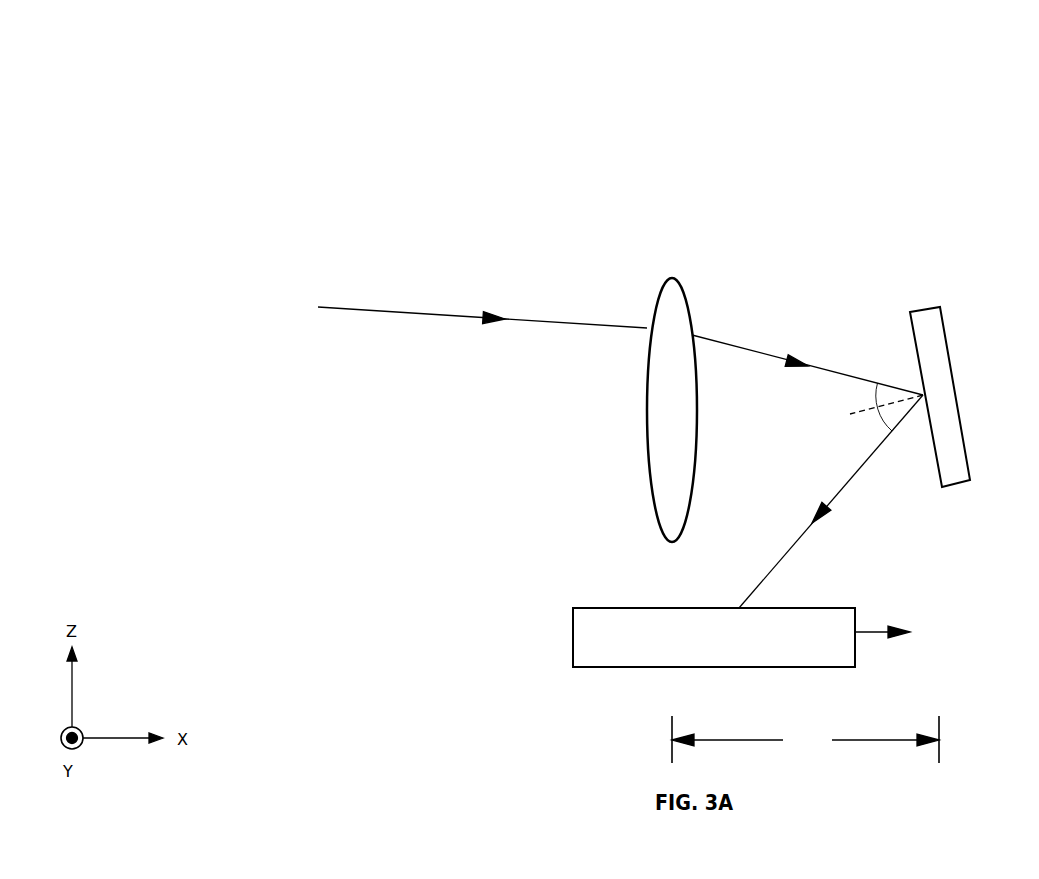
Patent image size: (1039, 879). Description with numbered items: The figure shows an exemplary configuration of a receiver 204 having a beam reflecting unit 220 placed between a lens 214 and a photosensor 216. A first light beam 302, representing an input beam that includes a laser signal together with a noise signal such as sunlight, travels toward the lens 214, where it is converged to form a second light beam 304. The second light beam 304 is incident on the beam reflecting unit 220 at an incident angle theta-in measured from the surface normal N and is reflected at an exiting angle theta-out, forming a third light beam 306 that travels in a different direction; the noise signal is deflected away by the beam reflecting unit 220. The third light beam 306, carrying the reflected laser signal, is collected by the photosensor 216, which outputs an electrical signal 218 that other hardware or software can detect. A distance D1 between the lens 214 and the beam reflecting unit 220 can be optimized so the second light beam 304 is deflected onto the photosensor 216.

The receiver 204 is at (686, 53).
The first light beam 302 is at (482, 288).
The lens 214 is at (700, 391).
The second light beam 304 is at (807, 340).
The beam reflecting unit 220 is at (962, 373).
The third light beam 306 is at (832, 501).
The photosensor 216 is at (714, 666).
The electrical signal 218 is at (907, 633).